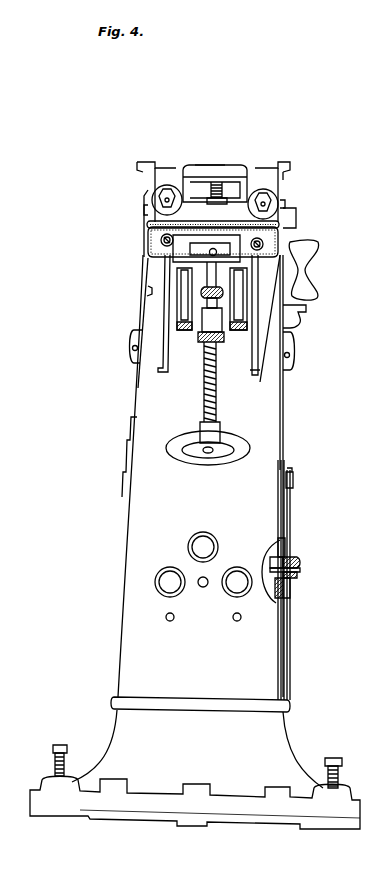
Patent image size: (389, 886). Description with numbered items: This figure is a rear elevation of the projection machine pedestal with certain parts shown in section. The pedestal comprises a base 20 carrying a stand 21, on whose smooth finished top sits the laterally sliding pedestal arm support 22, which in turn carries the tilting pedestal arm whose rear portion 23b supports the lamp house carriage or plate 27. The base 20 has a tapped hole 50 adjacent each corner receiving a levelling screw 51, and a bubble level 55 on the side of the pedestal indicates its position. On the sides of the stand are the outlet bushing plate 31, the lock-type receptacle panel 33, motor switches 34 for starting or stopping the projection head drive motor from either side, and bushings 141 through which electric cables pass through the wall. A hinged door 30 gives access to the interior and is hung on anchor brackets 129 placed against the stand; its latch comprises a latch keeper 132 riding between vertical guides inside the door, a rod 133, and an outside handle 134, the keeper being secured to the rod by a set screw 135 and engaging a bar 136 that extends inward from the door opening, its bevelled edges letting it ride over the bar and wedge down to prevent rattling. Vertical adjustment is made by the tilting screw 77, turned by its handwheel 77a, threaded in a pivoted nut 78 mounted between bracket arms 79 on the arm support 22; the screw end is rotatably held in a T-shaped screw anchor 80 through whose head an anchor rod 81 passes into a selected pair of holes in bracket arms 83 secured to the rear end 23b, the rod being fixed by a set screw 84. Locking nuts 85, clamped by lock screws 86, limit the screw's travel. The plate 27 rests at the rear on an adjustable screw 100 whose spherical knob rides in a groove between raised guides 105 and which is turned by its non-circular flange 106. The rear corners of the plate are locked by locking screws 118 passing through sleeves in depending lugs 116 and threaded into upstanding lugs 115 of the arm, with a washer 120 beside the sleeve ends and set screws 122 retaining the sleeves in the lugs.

The base 20 is at (280, 738).
The stand 21 is at (135, 643).
The pedestal arm support 22 is at (146, 289).
The rear portion of pedestal arm 23b is at (147, 218).
The lamp house carriage or plate 27 is at (203, 164).
The hinged door 30 is at (282, 512).
The outlet bushing plate 31 is at (123, 553).
The receptacle panel 33 is at (128, 446).
The motor switches 34 is at (129, 341).
The tapped hole 50 is at (48, 777).
The levelling screws 51 is at (66, 750).
The bubble level 55 is at (302, 309).
The tilting screw 77 is at (217, 406).
The handwheel 77a is at (230, 442).
The pivoted nut 78 is at (194, 332).
The bracket arms 79 is at (240, 332).
The T-shaped screw anchor 80 is at (193, 256).
The anchor rod 81 is at (292, 272).
The bracket arms 83 is at (148, 262).
The set screw 84 is at (214, 249).
The locking nuts 85 is at (226, 292).
The lock screws 86 is at (202, 293).
The adjustable screw 100 is at (200, 186).
The raised guides 105 is at (214, 203).
The non-circular flange or nut 106 is at (187, 173).
The upstanding lugs 115 is at (297, 222).
The depending lugs 116 is at (270, 200).
The locking screws 118 is at (272, 183).
The washer 120 is at (272, 178).
The set screws 122 is at (148, 197).
The anchor brackets 129 is at (295, 482).
The latch keeper 132 is at (268, 598).
The rod 133 is at (300, 572).
The handle 134 is at (300, 562).
The set screw 135 is at (277, 545).
The bar 136 is at (291, 594).
The bushings 141 is at (170, 570).